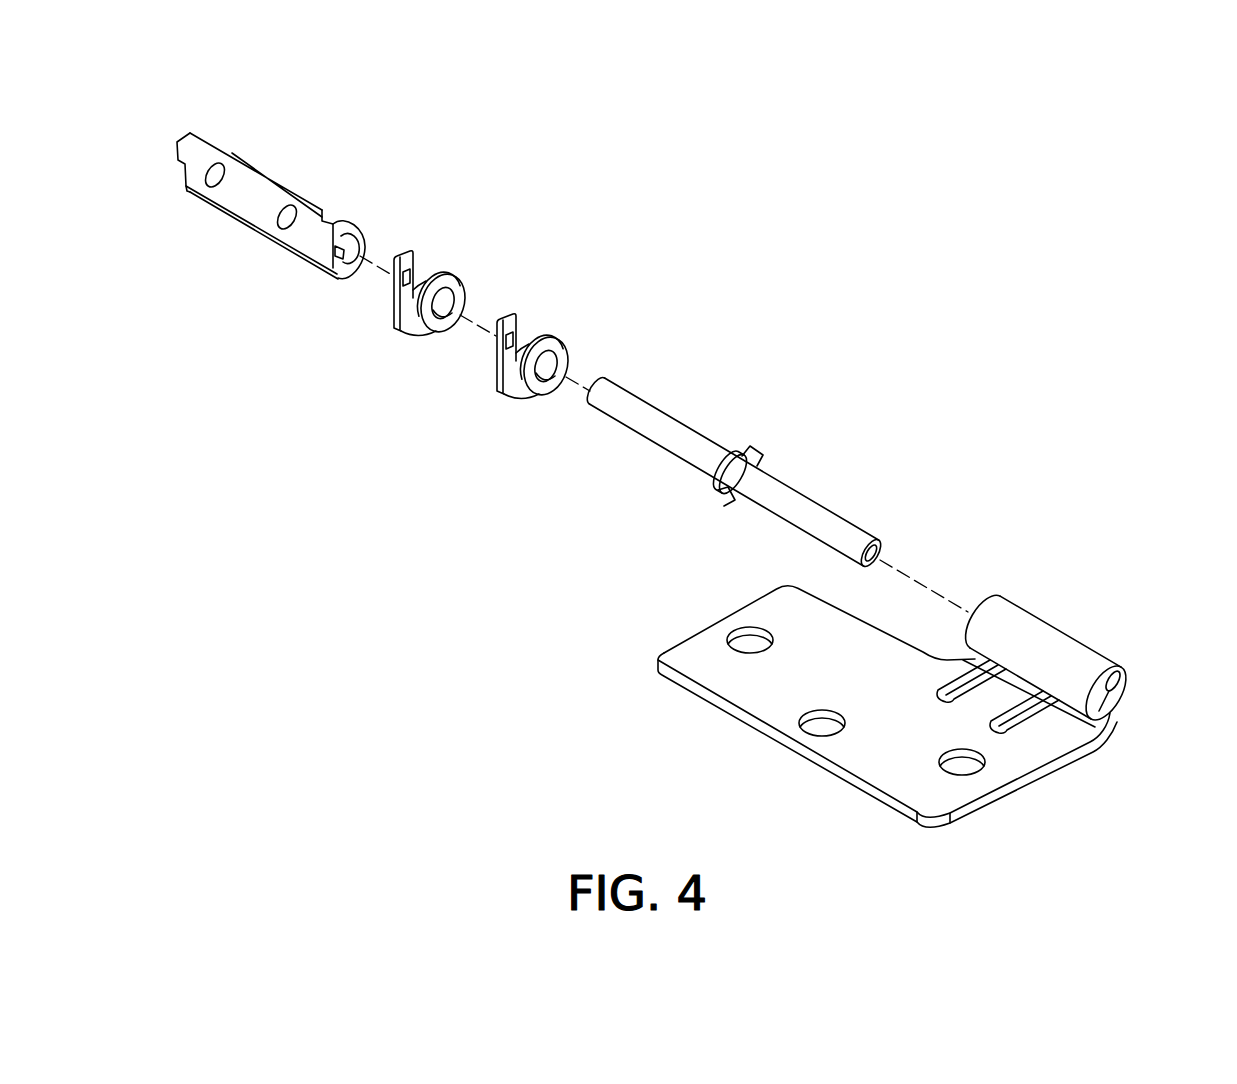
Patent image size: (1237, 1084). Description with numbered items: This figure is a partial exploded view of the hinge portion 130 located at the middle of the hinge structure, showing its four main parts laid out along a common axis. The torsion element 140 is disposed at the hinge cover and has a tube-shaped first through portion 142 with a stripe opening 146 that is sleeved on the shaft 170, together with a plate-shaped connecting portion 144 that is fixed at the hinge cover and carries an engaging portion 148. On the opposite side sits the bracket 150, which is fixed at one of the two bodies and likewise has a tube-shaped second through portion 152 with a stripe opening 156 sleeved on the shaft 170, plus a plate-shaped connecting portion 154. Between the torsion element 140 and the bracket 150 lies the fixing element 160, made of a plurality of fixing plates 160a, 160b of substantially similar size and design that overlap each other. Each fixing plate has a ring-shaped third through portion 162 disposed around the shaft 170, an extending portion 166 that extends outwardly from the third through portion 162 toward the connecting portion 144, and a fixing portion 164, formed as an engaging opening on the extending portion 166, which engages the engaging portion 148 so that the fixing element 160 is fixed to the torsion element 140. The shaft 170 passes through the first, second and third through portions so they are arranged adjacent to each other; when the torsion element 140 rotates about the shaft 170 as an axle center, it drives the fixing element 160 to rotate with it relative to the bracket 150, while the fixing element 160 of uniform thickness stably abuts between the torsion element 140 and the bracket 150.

The hinge portion 130 is at (792, 240).
The torsion element 140 is at (298, 162).
The first through portion 142 is at (335, 219).
The connecting portion 144 is at (250, 201).
The stripe opening 146 is at (335, 252).
The engaging portion 148 is at (322, 236).
The bracket 150 is at (1073, 597).
The second through portion 152 is at (1088, 663).
The connecting portion 154 is at (1008, 760).
The stripe opening 156 is at (1101, 712).
The fixing element 160 is at (548, 213).
The fixing plate 160a is at (565, 323).
The fixing plate 160b is at (465, 259).
The third through portion 162 is at (437, 309).
The fixing portion 164 is at (402, 279).
The extending portion 166 is at (402, 317).
The shaft 170 is at (815, 515).